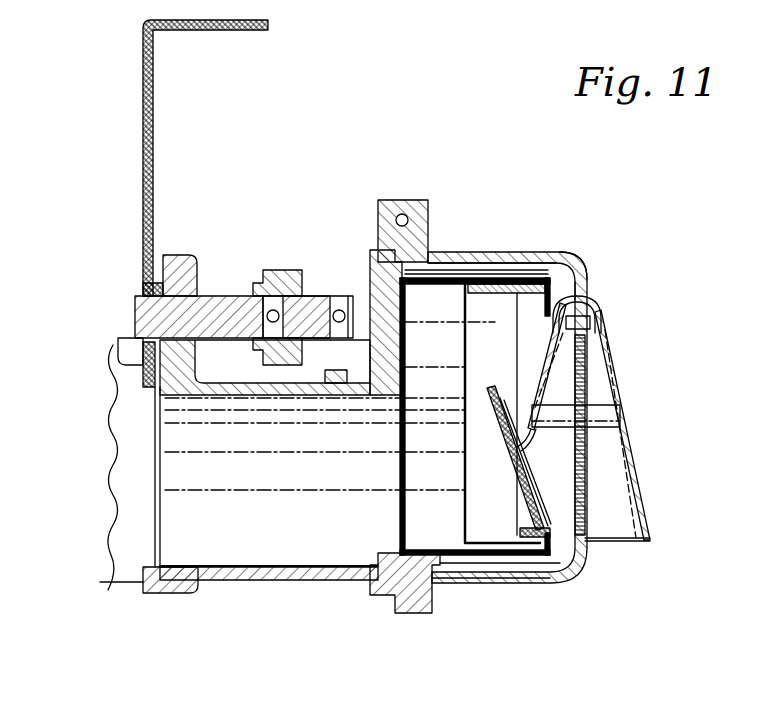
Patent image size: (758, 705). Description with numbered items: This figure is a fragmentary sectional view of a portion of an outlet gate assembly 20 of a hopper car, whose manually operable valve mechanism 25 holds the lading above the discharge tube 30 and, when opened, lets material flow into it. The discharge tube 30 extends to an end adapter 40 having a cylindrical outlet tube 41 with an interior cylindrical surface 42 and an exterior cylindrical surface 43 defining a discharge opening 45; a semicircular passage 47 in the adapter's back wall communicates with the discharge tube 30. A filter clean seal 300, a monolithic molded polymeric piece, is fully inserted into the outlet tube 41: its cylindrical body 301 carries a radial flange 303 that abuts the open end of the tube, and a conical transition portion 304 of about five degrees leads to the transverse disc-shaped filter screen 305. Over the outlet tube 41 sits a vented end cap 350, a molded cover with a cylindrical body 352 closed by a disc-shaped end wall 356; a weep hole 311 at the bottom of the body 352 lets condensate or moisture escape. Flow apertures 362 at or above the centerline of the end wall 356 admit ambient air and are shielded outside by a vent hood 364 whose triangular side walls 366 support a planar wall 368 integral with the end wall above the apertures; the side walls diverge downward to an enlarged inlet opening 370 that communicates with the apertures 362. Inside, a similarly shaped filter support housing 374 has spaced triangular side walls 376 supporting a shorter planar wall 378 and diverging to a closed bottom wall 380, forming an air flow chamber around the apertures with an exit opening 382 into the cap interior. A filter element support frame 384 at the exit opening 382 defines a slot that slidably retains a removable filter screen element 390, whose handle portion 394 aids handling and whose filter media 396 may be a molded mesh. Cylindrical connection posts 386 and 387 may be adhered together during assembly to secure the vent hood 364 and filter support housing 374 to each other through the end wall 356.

The outlet gate assembly 20 is at (136, 50).
The valve mechanism 25 is at (218, 300).
The discharge tube 30 is at (142, 532).
The end adapter 40 is at (345, 587).
The cylindrical outlet tube 41 is at (455, 268).
The interior cylindrical surface 42 is at (398, 292).
The exterior cylindrical surface 43 is at (442, 252).
The discharge opening 45 is at (572, 280).
The semicircular passage 47 is at (411, 462).
The filter clean seal 300 is at (459, 527).
The annular or cylindrical body 301 is at (533, 278).
The radial flange 303 is at (562, 260).
The conical transition portion 304 is at (478, 273).
The filter screen 305 is at (372, 290).
The drain hole or weep hole 311 is at (454, 584).
The vented end cap 350 is at (518, 244).
The cylindrical body 352 is at (540, 252).
The disc-shaped end wall 356 is at (585, 467).
The flow apertures 362 is at (592, 369).
The vent hood 364 is at (606, 300).
The triangular side walls 366 is at (613, 525).
The planar wall 368 is at (527, 498).
The inlet opening 370 is at (608, 562).
The filter support housing 374 is at (536, 368).
The triangular side walls 376 is at (550, 458).
The planar wall 378 is at (540, 330).
The closed bottom wall 380 is at (558, 545).
The exit opening 382 is at (478, 565).
The filter element support frame 384 is at (488, 457).
The connection post 386 is at (553, 302).
The connection post 387 is at (604, 306).
The filter screen element 390 is at (488, 433).
The handle portion 394 is at (488, 392).
The filter media 396 is at (630, 466).